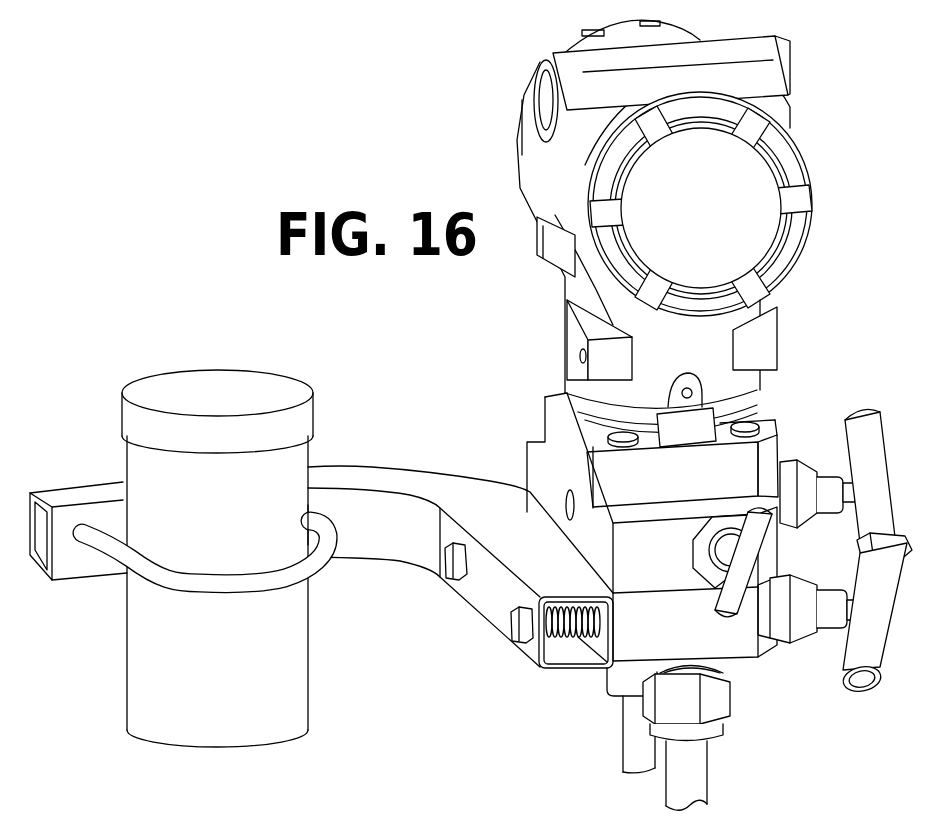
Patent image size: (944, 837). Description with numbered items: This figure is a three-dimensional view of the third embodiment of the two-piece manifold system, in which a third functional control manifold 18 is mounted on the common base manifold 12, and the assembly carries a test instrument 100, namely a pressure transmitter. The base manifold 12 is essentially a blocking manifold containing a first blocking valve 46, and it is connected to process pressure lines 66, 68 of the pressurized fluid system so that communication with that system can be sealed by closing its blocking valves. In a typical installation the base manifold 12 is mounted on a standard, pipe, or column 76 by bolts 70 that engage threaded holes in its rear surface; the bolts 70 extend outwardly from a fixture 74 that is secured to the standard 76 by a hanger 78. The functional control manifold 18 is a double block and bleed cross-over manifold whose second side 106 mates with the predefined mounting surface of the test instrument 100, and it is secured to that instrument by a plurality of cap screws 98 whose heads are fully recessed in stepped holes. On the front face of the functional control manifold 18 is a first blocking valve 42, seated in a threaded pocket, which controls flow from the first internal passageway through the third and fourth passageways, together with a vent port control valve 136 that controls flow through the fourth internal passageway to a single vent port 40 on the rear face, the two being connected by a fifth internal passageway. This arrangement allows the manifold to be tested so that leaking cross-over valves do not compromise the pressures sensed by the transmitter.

The base manifold 12 is at (762, 675).
The functional control manifold 18 is at (512, 480).
The vent port 40 is at (568, 510).
The blocking valve 42 is at (707, 543).
The first blocking valve 46 is at (793, 633).
The process pressure line 66 is at (686, 790).
The process pressure line 68 is at (637, 751).
The bolts 70 is at (517, 623).
The fixture 74 is at (80, 494).
The standard 76 is at (172, 706).
The hanger 78 is at (260, 577).
The cap screws 98 is at (752, 428).
The test instrument 100 is at (820, 126).
The second side 106 is at (540, 440).
The vent port control valve 136 is at (794, 468).